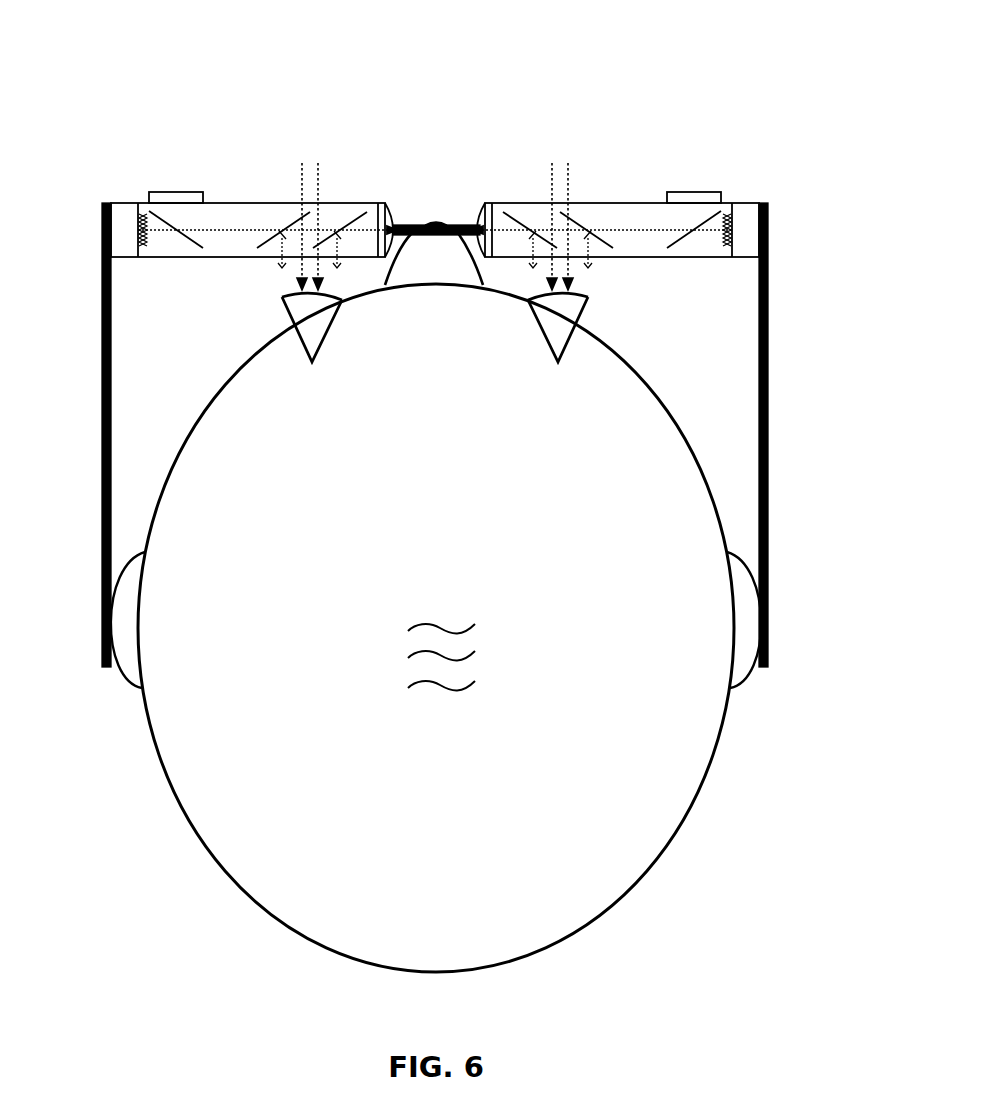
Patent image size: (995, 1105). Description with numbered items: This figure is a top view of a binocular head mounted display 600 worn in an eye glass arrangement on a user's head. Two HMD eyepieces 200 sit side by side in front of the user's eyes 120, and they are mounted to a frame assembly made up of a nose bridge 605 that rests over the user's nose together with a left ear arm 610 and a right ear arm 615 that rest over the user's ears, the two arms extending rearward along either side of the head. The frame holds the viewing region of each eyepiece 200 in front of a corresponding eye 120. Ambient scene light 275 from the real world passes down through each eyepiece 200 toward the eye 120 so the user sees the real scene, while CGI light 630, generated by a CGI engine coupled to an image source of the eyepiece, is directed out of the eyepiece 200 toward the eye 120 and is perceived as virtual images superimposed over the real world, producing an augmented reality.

The head mounted display 600 is at (435, 340).
The HMD eyepiece 200 is at (167, 160).
The ambient scene light 275 is at (302, 163).
The nose bridge 605 is at (466, 226).
The left ear arm 610 is at (103, 435).
The right ear arm 615 is at (768, 433).
The CGI light 630 is at (273, 270).
The eye 120 is at (322, 346).